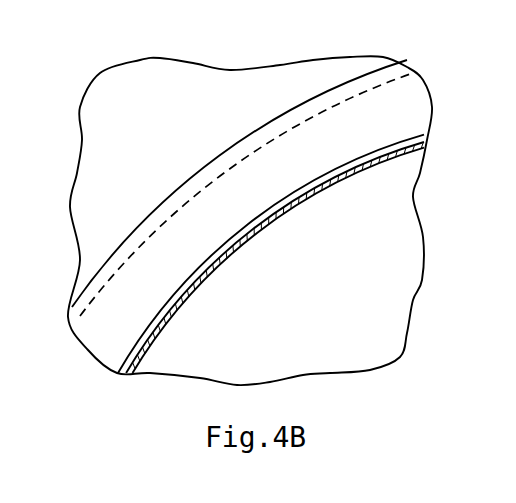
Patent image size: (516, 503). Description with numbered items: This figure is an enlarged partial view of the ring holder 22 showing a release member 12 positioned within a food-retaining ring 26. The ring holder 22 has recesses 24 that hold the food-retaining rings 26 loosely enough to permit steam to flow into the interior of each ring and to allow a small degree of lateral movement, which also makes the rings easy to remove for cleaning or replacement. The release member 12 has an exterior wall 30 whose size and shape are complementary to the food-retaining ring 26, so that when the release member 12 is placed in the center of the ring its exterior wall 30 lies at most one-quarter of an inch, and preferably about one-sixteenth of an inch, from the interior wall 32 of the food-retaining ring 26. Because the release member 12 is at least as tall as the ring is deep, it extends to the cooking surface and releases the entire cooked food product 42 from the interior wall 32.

The release member 12 is at (273, 257).
The ring holder 22 is at (236, 100).
The recess 24 is at (112, 247).
The food-retaining ring 26 is at (413, 95).
The exterior wall 30 is at (129, 351).
The interior wall 32 is at (134, 330).
The cooked egg or food product 42 is at (397, 238).